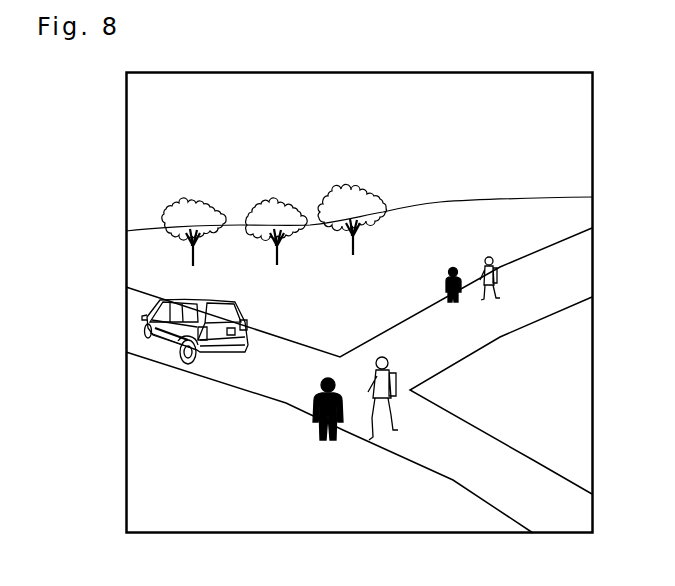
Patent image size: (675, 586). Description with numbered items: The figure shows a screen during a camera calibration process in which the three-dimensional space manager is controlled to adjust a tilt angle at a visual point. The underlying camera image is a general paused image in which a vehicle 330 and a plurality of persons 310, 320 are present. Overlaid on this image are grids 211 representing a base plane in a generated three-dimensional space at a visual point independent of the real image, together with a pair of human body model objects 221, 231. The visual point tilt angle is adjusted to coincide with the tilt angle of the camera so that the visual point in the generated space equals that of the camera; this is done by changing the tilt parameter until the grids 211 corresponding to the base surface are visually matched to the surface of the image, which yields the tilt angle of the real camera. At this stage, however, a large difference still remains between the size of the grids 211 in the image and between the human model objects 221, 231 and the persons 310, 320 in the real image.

The grids 211 is at (560, 337).
The human body model object 221 is at (317, 443).
The human body model object 231 is at (452, 267).
The person 310 is at (372, 445).
The person 320 is at (489, 256).
The vehicle 330 is at (144, 315).